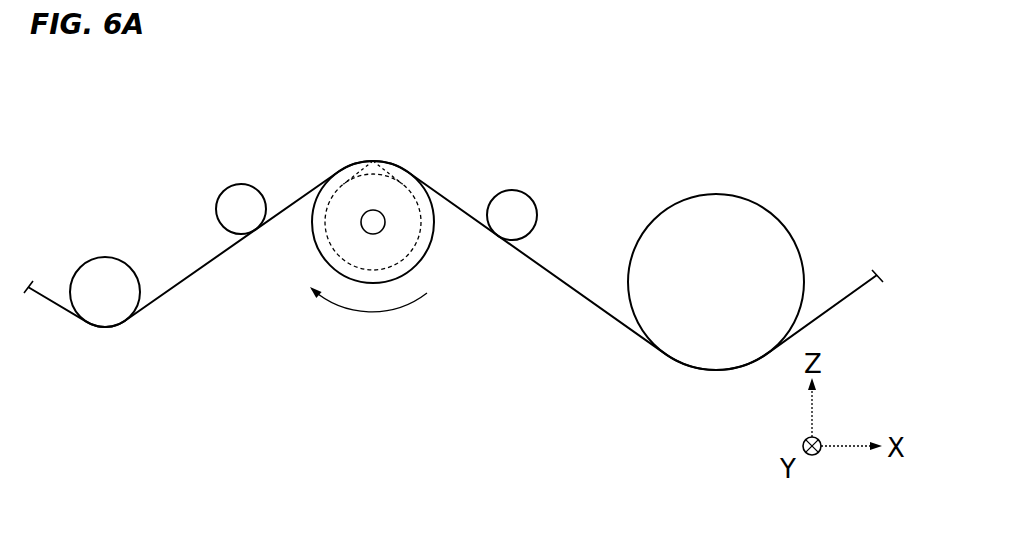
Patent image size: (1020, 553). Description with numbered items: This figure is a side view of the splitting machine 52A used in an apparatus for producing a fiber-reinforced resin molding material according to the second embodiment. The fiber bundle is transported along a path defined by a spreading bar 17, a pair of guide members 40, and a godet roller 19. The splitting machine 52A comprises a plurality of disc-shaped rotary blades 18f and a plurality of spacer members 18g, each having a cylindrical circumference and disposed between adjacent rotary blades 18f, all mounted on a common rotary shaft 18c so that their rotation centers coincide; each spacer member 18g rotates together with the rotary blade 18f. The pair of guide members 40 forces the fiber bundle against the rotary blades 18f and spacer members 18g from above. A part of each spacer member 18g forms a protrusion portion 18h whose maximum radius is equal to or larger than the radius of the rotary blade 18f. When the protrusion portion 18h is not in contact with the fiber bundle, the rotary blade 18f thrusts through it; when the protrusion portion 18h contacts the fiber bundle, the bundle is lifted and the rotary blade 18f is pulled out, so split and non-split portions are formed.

The spreading bar 17 is at (98, 257).
The guide member 40 is at (217, 203).
The godet roller 19 is at (755, 203).
The splitting machine 52A is at (305, 350).
The rotary shaft 18c is at (361, 223).
The rotary blade 18f is at (423, 258).
The spacer member 18g is at (412, 177).
The protrusion portion 18h is at (376, 150).